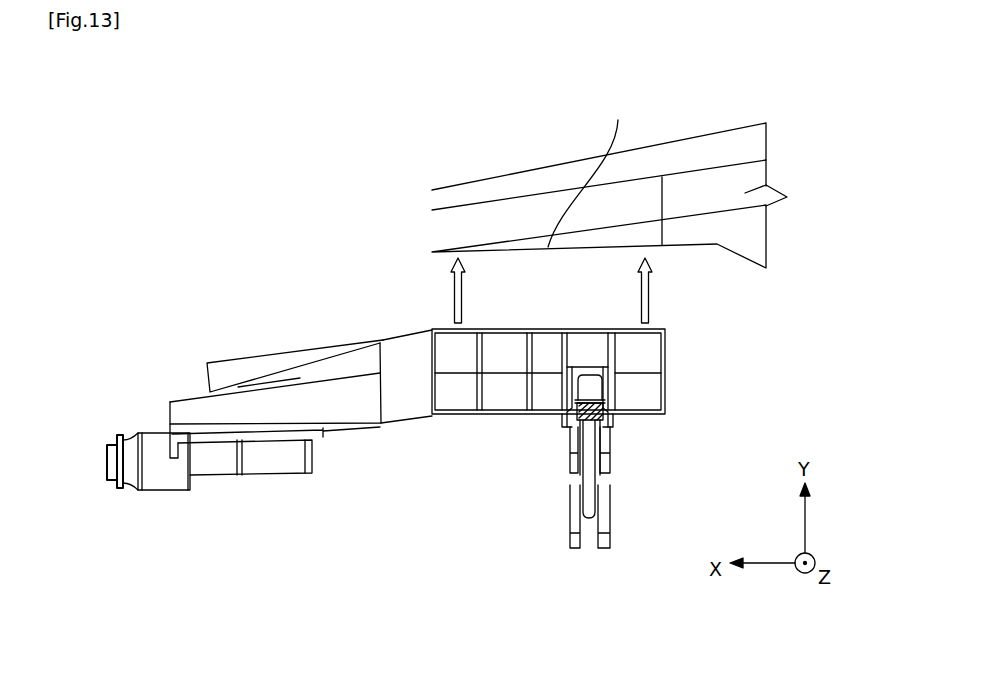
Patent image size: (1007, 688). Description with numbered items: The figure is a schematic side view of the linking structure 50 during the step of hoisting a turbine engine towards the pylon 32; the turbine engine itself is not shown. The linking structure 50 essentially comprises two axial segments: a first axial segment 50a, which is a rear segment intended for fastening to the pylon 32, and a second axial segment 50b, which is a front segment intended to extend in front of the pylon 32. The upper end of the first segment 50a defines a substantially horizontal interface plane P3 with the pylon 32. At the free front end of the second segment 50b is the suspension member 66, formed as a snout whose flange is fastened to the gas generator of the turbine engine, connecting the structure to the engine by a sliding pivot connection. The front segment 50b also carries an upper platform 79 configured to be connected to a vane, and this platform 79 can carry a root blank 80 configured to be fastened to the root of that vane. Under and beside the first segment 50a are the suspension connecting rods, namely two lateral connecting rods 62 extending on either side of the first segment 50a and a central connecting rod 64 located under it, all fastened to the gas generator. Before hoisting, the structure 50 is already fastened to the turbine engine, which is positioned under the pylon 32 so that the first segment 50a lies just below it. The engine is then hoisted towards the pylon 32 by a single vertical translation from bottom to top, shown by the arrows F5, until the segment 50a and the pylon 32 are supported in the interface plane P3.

The pylon 32 is at (431, 203).
The interface plane P3 is at (588, 170).
The hoisting arrows F5 is at (452, 302).
The linking structure 50 is at (428, 430).
The first axial segment 50a is at (653, 387).
The second axial segment 50b is at (323, 437).
The upper platform 79 is at (238, 387).
The root blank 80 is at (232, 365).
The central connecting rod 64 is at (602, 440).
The lateral connecting rods 62 is at (590, 476).
The suspension member 66 is at (102, 508).